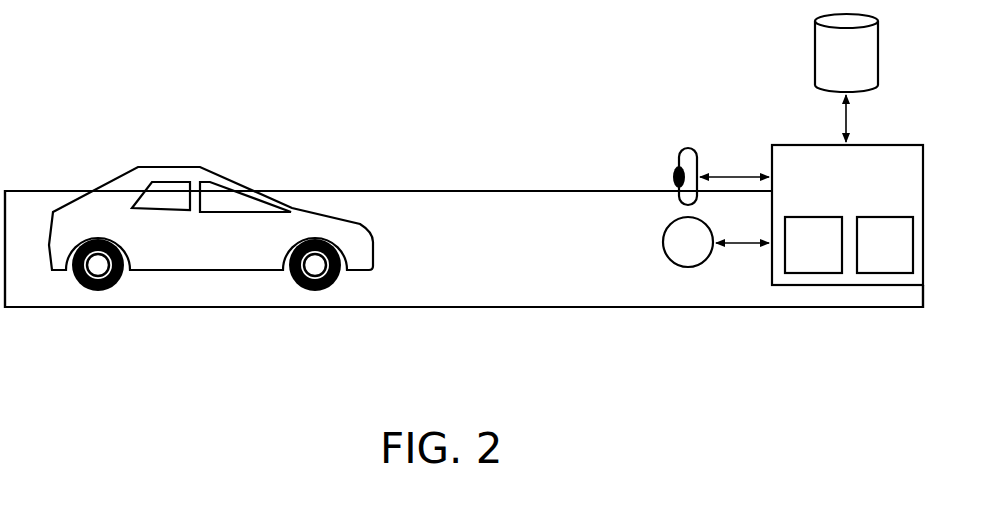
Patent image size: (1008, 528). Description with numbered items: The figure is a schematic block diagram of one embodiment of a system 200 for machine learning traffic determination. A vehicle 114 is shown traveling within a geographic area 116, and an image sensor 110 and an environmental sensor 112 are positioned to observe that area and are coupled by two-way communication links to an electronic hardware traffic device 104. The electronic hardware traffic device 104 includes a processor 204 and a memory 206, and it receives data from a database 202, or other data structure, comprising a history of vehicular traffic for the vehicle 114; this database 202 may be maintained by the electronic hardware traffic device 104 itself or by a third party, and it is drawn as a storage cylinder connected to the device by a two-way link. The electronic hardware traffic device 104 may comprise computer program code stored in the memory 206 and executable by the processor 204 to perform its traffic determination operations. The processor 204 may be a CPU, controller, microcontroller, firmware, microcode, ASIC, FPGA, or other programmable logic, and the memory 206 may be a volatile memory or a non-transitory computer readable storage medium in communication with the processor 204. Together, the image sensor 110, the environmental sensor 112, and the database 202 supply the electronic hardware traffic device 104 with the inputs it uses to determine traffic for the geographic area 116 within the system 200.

The system for machine learning traffic determination 200 is at (153, 24).
The vehicle 114 is at (137, 175).
The geographic area 116 is at (387, 293).
The image sensor 110 is at (690, 147).
The environmental sensor 112 is at (716, 242).
The electronic hardware traffic device 104 is at (847, 215).
The database 202 is at (846, 78).
The processor 204 is at (813, 245).
The memory 206 is at (885, 245).